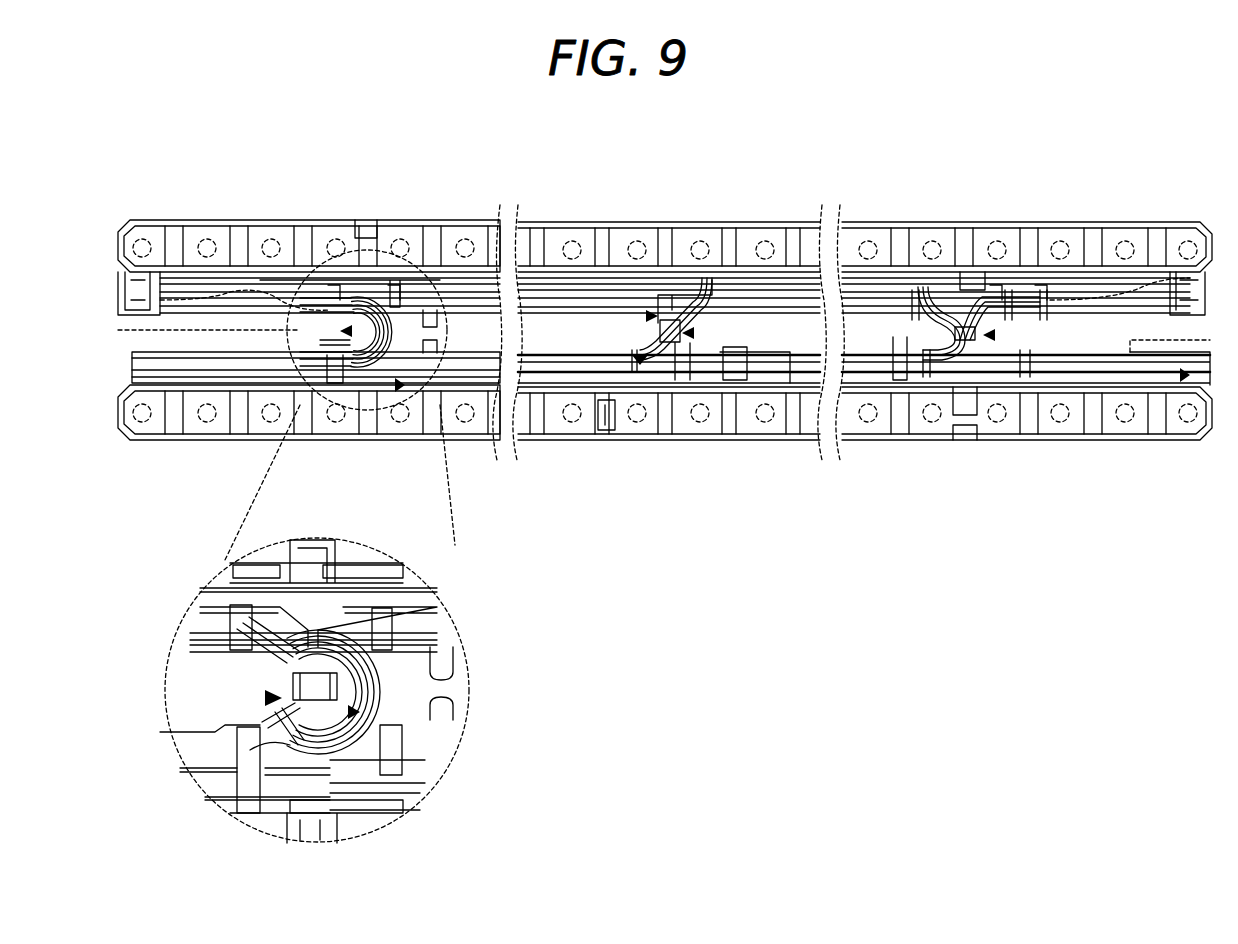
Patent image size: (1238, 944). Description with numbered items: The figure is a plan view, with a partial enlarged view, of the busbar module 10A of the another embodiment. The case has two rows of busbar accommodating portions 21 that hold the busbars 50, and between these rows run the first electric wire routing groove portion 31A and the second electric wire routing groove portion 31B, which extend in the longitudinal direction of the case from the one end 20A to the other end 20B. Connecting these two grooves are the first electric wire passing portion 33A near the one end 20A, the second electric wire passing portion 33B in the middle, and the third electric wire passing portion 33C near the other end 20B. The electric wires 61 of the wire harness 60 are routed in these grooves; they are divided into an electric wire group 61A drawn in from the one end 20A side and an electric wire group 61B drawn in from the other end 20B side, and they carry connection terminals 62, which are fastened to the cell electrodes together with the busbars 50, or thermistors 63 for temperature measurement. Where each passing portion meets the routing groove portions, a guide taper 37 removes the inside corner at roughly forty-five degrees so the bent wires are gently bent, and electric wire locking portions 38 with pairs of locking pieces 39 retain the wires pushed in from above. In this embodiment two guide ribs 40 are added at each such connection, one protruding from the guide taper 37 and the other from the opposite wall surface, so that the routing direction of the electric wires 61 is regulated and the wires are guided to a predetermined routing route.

The busbar module 10A is at (948, 197).
The one end of the case 20A is at (120, 332).
The other end of the case 20B is at (1215, 440).
The busbar accommodating portions 21 is at (255, 222).
The first electric wire routing groove portion 31A is at (520, 440).
The second electric wire routing groove portion 31B is at (530, 222).
The first electric wire passing portion 33A is at (335, 335).
The second electric wire passing portion 33B is at (700, 385).
The third electric wire passing portion 33C is at (985, 395).
The guide taper 37 is at (348, 300).
The electric wire locking portion 38 is at (330, 290).
The locking pieces 39 is at (260, 640).
The guide rib 40 is at (348, 328).
The busbar 50 is at (282, 240).
The wire harness 60 is at (480, 385).
The electric wire 61 is at (210, 280).
The electric wire group 61A is at (452, 470).
The electric wire group 61B is at (795, 380).
The connection terminal 62 is at (178, 215).
The thermistor 63 is at (140, 276).